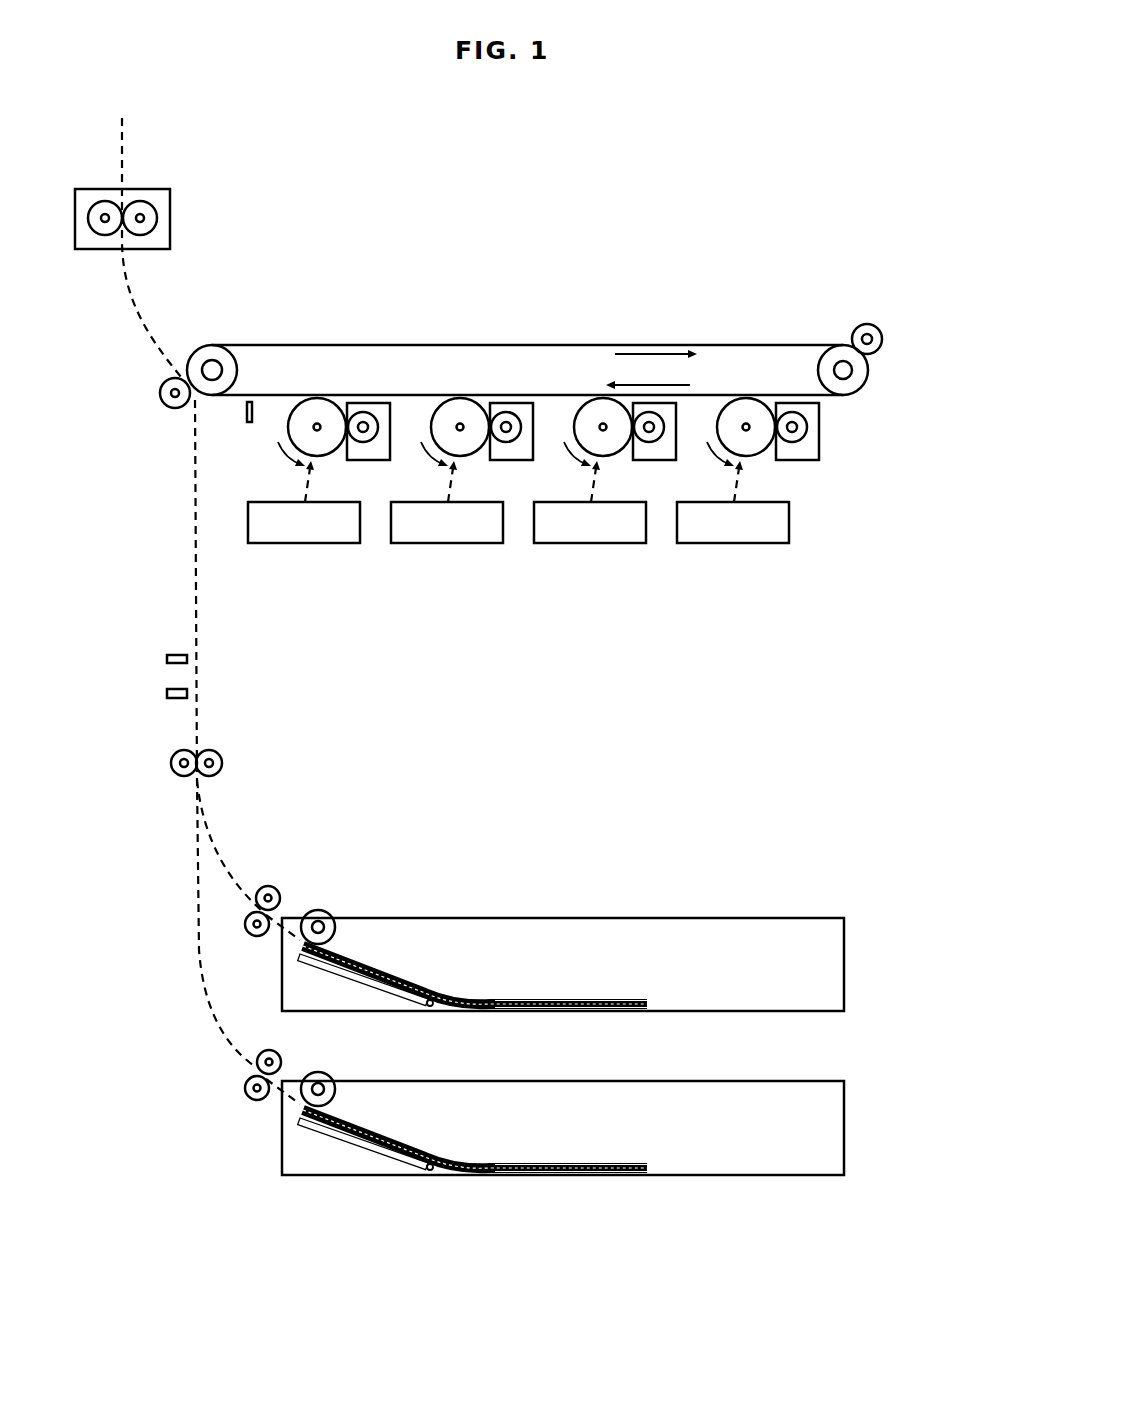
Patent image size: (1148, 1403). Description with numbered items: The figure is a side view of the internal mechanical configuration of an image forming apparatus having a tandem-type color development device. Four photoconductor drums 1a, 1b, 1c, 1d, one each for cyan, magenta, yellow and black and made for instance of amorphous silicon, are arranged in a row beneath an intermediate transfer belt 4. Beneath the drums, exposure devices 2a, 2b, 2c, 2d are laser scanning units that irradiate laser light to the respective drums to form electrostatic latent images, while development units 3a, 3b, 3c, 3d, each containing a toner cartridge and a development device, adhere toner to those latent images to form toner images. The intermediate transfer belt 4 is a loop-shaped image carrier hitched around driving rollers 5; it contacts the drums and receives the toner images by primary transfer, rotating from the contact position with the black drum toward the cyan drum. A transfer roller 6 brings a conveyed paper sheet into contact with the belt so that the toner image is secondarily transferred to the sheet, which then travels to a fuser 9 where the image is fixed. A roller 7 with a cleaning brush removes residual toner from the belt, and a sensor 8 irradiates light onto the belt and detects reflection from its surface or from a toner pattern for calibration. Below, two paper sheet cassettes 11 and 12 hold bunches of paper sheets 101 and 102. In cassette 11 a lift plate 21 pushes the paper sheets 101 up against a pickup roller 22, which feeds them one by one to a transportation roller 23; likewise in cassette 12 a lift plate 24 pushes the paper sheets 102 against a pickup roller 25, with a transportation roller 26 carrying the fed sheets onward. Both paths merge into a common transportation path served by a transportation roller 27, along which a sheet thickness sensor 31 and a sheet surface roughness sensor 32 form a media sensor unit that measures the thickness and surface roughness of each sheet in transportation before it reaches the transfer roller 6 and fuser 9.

The photoconductor drum 1a is at (301, 408).
The photoconductor drum 1b is at (444, 408).
The photoconductor drum 1c is at (587, 408).
The photoconductor drum 1d is at (726, 408).
The exposure device 2a is at (304, 543).
The exposure device 2b is at (447, 543).
The exposure device 2c is at (590, 543).
The exposure device 2d is at (733, 543).
The development unit 3a is at (365, 460).
The development unit 3b is at (508, 460).
The development unit 3c is at (651, 460).
The development unit 3d is at (794, 460).
The intermediate transfer belt 4 is at (618, 346).
The driving rollers 5 is at (197, 345).
The transfer roller 6 is at (162, 403).
The roller 7 is at (871, 325).
The sensor 8 is at (249, 423).
The fuser 9 is at (170, 216).
The paper sheet cassette 11 is at (844, 961).
The paper sheet cassette 12 is at (844, 1123).
The lift plate 21 is at (407, 998).
The pickup roller 22 is at (325, 912).
The transportation roller 23 is at (282, 892).
The lift plate 24 is at (407, 1163).
The pickup roller 25 is at (324, 1076).
The transportation roller 26 is at (282, 1057).
The transportation roller 27 is at (171, 760).
The sheet thickness sensor 31 is at (167, 658).
The sheet surface roughness sensor 32 is at (167, 692).
The paper sheets 101 is at (626, 998).
The paper sheets 102 is at (626, 1162).